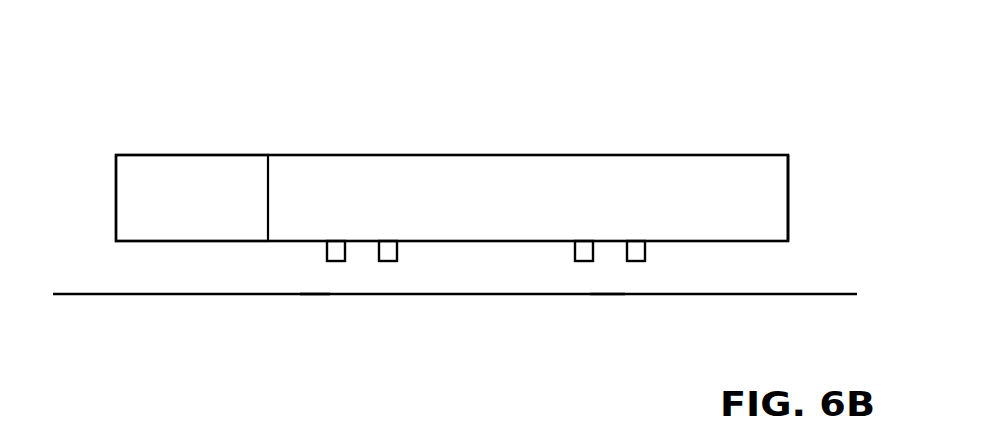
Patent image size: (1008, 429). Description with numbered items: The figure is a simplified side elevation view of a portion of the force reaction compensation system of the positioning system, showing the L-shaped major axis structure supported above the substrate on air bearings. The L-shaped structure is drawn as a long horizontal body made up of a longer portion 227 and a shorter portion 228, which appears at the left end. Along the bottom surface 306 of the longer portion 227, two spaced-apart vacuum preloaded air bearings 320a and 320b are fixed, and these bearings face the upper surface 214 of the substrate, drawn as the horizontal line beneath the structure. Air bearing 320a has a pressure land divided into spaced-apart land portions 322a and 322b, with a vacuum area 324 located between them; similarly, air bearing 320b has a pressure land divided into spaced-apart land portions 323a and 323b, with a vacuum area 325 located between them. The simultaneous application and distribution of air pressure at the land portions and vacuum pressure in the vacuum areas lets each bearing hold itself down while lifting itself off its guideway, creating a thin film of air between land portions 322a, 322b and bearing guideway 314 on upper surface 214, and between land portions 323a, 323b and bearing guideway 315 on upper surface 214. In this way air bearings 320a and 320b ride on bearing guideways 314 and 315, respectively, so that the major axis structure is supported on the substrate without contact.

The longer portion 227 is at (503, 150).
The shorter portion 228 is at (165, 175).
The bottom surface 306 is at (780, 243).
The upper surface 214 is at (822, 293).
The land portion 322a is at (334, 242).
The land portion 322b is at (387, 242).
The land portion 323a is at (583, 242).
The land portion 323b is at (637, 242).
The vacuum area 324 is at (362, 257).
The vacuum area 325 is at (608, 253).
The bearing guideway 314 is at (325, 294).
The bearing guideway 315 is at (616, 294).
The vacuum preloaded air bearing 320a is at (250, 272).
The vacuum preloaded air bearing 320b is at (658, 280).